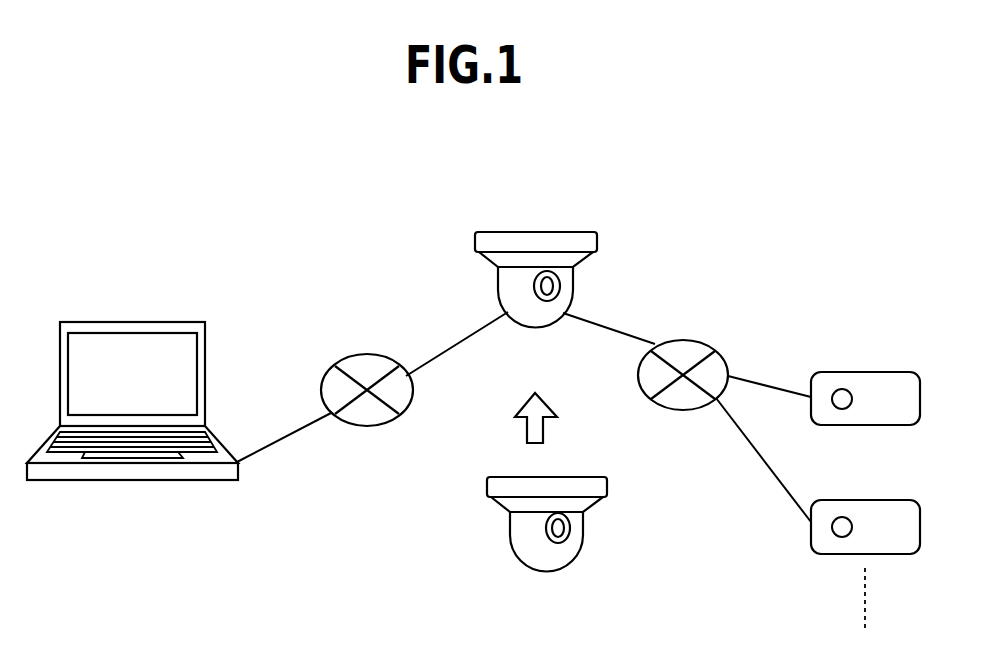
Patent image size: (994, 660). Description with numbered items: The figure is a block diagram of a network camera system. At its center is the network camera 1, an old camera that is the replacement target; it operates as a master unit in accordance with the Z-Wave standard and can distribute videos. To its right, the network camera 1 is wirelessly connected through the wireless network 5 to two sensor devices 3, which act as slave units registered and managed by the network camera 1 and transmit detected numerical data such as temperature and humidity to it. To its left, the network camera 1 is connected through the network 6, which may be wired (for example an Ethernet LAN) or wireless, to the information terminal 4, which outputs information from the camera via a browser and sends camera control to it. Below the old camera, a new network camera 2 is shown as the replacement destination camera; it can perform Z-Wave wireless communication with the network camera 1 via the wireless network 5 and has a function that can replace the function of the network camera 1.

The network camera 1 is at (539, 232).
The network camera 2 is at (586, 477).
The sensor devices 3 is at (870, 372).
The information terminal 4 is at (129, 322).
The wireless network 5 is at (691, 338).
The network 6 is at (370, 354).